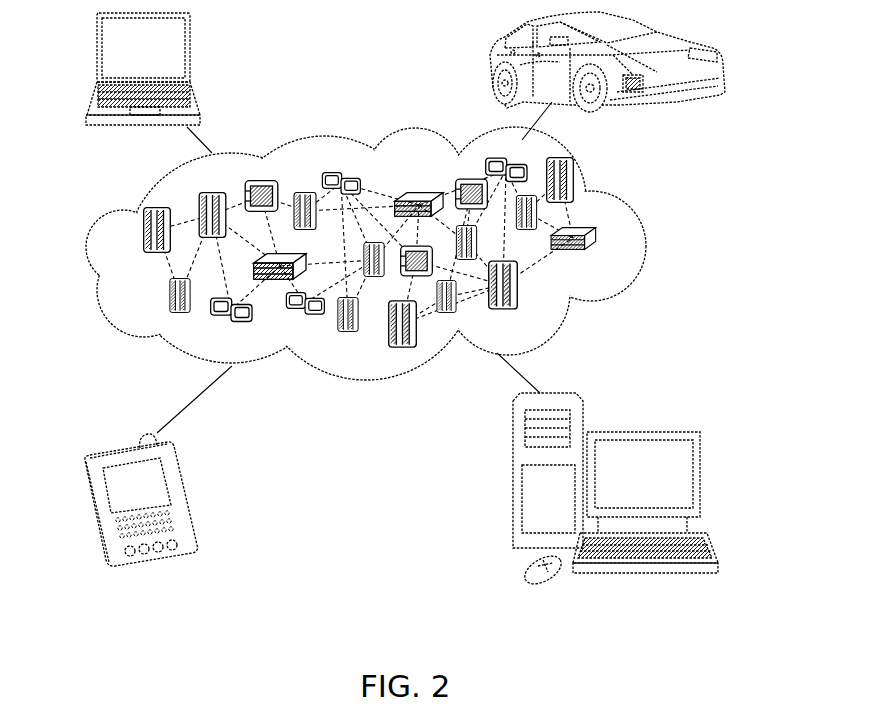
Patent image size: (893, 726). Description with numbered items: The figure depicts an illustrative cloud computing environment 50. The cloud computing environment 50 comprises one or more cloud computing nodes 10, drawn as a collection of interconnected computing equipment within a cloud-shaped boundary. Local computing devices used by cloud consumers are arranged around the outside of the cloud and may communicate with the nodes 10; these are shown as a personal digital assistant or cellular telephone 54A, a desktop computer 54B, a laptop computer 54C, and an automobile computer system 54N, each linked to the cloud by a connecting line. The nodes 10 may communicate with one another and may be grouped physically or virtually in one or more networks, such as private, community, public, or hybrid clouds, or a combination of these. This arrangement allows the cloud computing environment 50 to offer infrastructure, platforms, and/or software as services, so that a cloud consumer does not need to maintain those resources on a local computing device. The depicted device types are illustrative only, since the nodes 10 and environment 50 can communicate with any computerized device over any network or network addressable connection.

The cloud computing environment 50 is at (382, 253).
The cloud computing node 10 is at (607, 260).
The personal digital assistant (PDA) or cellular telephone 54A is at (182, 497).
The desktop computer 54B is at (641, 431).
The laptop computer 54C is at (190, 53).
The automobile computer system 54N is at (490, 63).